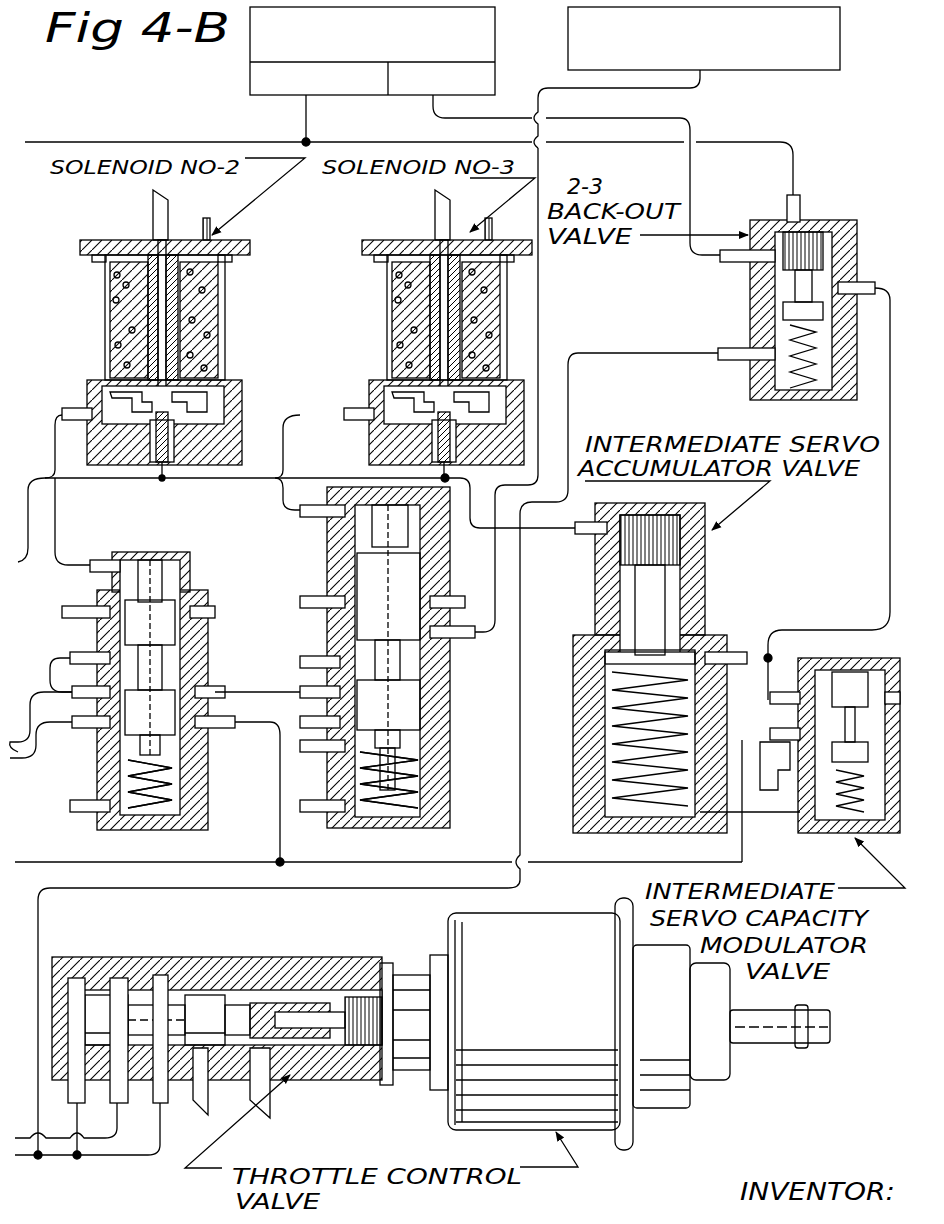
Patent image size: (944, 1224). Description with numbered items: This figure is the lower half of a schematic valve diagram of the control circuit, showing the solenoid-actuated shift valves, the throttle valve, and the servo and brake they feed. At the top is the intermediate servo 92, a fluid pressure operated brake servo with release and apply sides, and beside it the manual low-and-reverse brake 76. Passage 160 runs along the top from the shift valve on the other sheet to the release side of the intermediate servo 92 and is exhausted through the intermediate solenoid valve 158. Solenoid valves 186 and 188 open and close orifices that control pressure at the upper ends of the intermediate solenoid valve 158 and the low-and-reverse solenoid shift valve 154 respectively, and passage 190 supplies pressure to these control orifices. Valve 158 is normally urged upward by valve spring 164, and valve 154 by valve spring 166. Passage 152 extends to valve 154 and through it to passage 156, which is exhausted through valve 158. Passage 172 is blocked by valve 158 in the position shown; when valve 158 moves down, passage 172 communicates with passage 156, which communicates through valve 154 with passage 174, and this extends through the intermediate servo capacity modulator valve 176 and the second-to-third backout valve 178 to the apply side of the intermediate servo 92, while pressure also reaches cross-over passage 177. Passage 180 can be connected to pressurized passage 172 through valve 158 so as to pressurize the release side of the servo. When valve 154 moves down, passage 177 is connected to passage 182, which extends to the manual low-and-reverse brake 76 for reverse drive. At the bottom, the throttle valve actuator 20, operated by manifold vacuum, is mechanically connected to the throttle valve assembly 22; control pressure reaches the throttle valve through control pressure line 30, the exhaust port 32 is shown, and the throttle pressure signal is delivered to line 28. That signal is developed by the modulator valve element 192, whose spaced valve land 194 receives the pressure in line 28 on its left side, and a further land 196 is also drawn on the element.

The intermediate servo 92 is at (250, 45).
The manual low-and-reverse brake 76 is at (568, 40).
The passage 160 is at (90, 140).
The solenoid valve 186 is at (125, 235).
The solenoid valve 188 is at (408, 235).
The passage 182 is at (540, 338).
The 2-3 backout valve 178 is at (833, 232).
The passage 190 is at (55, 526).
The intermediate solenoid valve 158 is at (208, 640).
The low-and-reverse solenoid shift valve 154 is at (375, 622).
The passage 156 is at (250, 690).
The passage 180 is at (60, 690).
The passage 172 is at (55, 740).
The cross-over passage 177 is at (258, 748).
The valve spring 164 is at (205, 800).
The valve spring 166 is at (445, 792).
The intermediate servo capacity modulator valve 176 is at (868, 655).
The passage 152 is at (75, 866).
The passage 174 is at (497, 866).
The valve land 194 is at (102, 1000).
The modulator valve element 192 is at (160, 1005).
The throttle valve land 196 is at (215, 1000).
The throttle valve assembly 22 is at (260, 985).
The throttle valve actuator 20 is at (468, 930).
The exhaust port 32 is at (198, 1100).
The control pressure line 30 is at (45, 1158).
The line 28 is at (98, 1160).